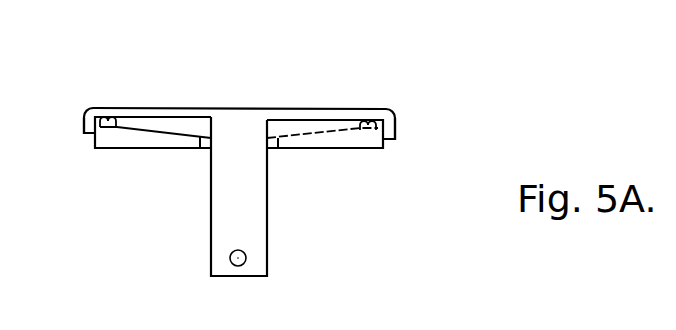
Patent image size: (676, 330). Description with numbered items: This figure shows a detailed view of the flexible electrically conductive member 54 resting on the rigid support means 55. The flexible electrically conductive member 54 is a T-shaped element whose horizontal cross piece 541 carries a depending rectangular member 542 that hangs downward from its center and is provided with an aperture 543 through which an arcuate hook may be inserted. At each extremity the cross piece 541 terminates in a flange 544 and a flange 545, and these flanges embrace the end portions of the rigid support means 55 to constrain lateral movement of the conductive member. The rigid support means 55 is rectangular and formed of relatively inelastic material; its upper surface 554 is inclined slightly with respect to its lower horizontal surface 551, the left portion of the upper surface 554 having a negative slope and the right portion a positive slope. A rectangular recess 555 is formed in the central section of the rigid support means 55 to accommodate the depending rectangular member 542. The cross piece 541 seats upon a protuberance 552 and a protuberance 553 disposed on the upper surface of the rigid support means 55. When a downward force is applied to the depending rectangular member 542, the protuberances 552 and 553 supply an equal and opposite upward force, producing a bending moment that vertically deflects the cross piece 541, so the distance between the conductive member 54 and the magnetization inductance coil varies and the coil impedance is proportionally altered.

The flexible electrically conductive member 54 is at (202, 92).
The cross piece 541 is at (233, 107).
The depending rectangular member 542 is at (267, 213).
The aperture 543 is at (238, 266).
The flange 544 is at (397, 128).
The flange 545 is at (83, 116).
The rigid support means 55 is at (172, 203).
The lower horizontal surface 551 is at (132, 149).
The protuberance 552 is at (122, 118).
The protuberance 553 is at (358, 121).
The upper surface 554 is at (151, 128).
The rectangular recess 555 is at (206, 150).